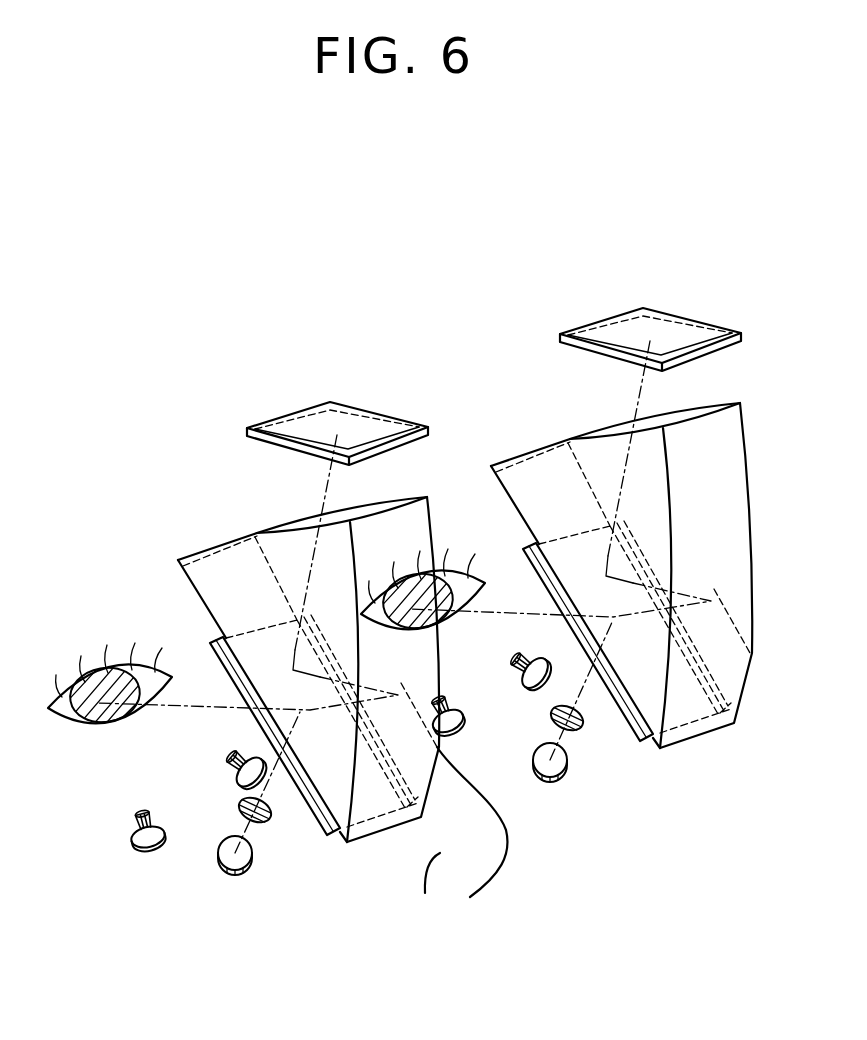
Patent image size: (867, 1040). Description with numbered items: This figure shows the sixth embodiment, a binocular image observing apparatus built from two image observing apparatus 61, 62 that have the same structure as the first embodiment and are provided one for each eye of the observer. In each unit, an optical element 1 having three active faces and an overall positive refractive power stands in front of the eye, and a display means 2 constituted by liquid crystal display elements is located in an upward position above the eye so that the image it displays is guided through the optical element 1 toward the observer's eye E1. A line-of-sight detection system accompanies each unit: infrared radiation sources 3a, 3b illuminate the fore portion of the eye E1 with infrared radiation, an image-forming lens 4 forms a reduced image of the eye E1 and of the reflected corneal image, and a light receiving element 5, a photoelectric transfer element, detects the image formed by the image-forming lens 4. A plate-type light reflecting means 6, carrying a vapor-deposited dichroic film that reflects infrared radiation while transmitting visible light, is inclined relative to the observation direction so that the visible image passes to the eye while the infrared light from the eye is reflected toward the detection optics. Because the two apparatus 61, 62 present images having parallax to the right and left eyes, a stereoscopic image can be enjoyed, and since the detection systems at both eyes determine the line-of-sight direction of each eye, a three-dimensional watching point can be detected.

The optical element 1 is at (227, 557).
The display means 2 is at (289, 413).
The infrared radiation source 3a is at (148, 848).
The infrared radiation source 3b is at (232, 782).
The image-forming lens 4 is at (263, 823).
The light receiving element 5 is at (240, 878).
The light reflecting means 6 is at (332, 834).
The image observing apparatus 61 is at (436, 363).
The image observing apparatus 62 is at (766, 294).
The eye of observer E1 is at (75, 723).